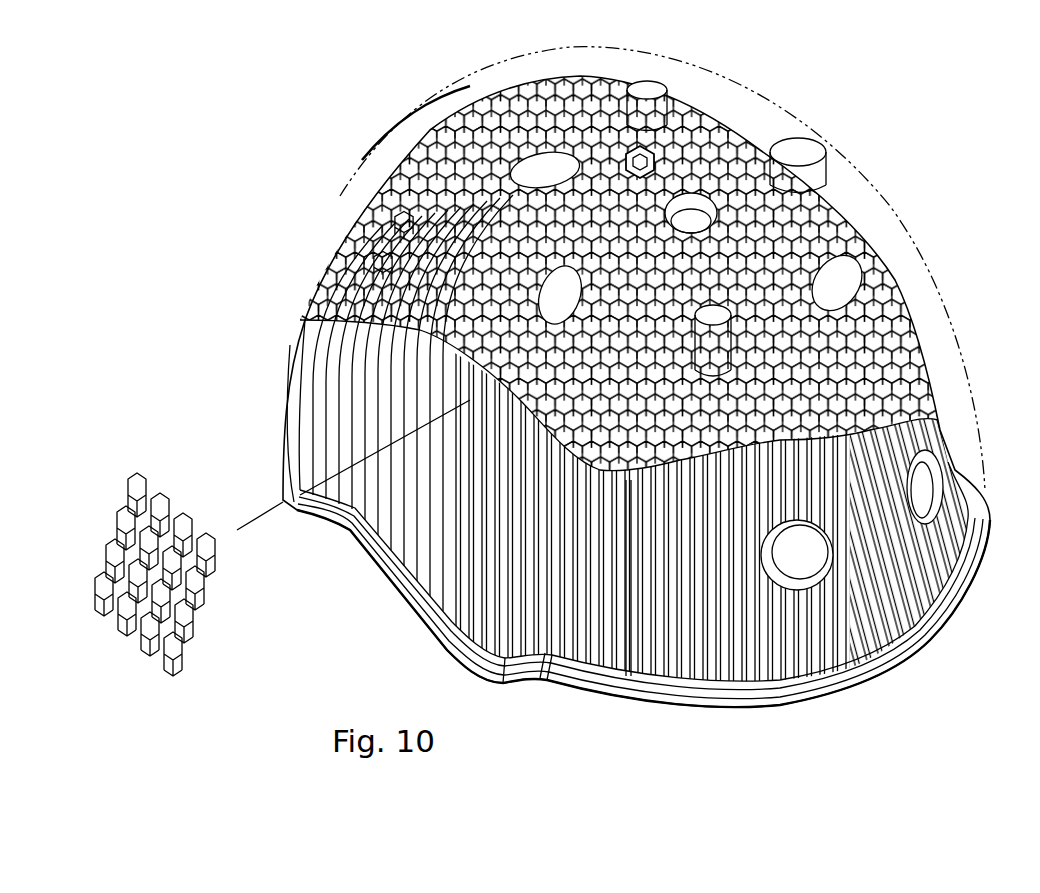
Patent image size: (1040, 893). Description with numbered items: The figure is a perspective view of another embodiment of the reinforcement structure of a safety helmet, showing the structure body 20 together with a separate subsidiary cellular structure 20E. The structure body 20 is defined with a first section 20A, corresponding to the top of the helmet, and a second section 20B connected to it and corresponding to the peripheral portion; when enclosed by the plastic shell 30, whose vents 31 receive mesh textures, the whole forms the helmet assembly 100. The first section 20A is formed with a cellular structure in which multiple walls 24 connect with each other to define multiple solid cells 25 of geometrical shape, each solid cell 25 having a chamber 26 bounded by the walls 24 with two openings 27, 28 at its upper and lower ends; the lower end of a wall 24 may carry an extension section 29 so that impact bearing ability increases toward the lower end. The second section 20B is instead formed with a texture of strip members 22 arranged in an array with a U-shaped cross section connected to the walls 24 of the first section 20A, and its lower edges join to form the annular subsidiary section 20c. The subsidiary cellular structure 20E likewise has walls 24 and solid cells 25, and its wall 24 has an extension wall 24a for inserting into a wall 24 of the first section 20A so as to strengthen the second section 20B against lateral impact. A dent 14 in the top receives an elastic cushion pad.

The helmet assembly 100 is at (372, 97).
The structure body 20 is at (900, 298).
The first section 20A is at (599, 82).
The second section 20B is at (445, 511).
The subsidiary section 20c is at (603, 697).
The subsidiary cellular structure 20E is at (127, 466).
The dent 14 is at (650, 162).
The strip member 22 is at (737, 650).
The wall 24 is at (640, 678).
The extension wall 24a is at (216, 550).
The solid cell 25 is at (388, 218).
The chamber 26 is at (376, 258).
The opening 27 is at (160, 512).
The opening 28 is at (150, 614).
The extension section 29 is at (546, 668).
The plastic shell 30 is at (892, 225).
The vent 31 is at (806, 176).